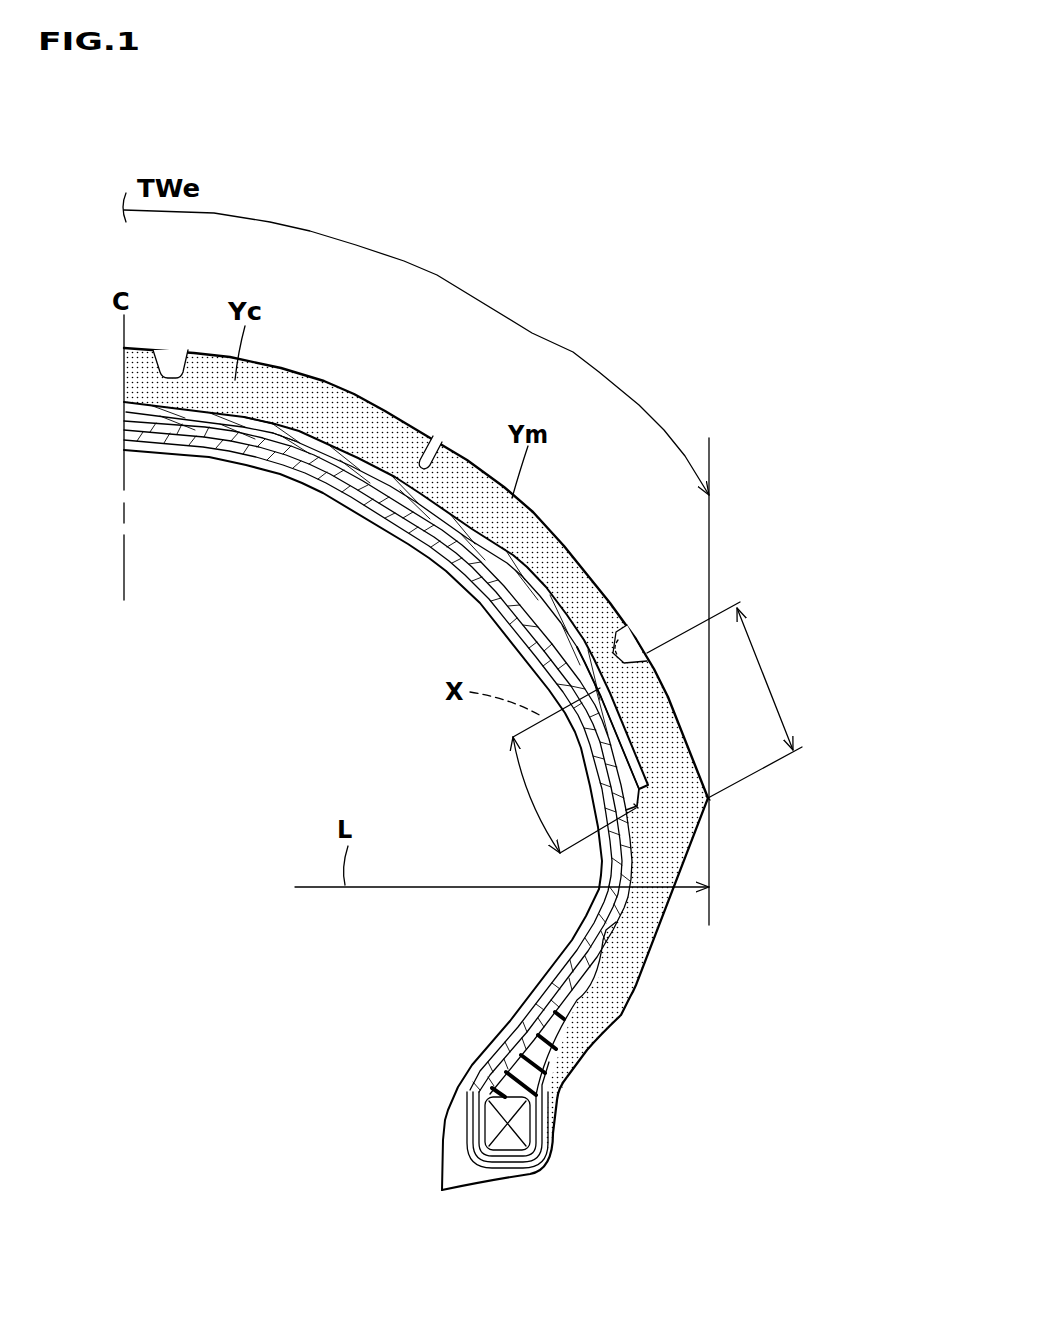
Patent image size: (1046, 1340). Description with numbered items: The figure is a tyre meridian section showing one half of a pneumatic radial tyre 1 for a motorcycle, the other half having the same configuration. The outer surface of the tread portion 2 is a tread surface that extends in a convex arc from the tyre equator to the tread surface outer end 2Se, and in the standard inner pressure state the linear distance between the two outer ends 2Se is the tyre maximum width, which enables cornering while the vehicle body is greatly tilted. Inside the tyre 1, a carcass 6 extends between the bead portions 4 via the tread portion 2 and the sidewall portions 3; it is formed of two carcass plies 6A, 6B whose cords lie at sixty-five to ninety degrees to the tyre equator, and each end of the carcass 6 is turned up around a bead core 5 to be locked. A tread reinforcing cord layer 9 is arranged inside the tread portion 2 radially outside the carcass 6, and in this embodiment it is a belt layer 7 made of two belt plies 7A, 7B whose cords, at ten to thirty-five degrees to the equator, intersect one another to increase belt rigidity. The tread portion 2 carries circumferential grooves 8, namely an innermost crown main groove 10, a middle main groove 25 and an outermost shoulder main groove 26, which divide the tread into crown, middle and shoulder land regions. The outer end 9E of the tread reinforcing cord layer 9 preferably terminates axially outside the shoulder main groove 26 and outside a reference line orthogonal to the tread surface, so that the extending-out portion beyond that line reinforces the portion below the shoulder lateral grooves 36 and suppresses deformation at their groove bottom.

The pneumatic radial tyre 1 is at (280, 358).
The tread portion 2 is at (348, 392).
The sidewall portion 3 is at (657, 975).
The bead portion 4 is at (539, 1056).
The bead core 5 is at (497, 1120).
The carcass 6 is at (378, 805).
The carcass ply 6A is at (563, 972).
The carcass ply 6B is at (542, 1018).
The belt layer 7 is at (386, 595).
The belt ply 7A is at (218, 425).
The belt ply 7B is at (288, 440).
The circumferential groove 8 is at (409, 451).
The crown main groove 10 is at (173, 360).
The middle main groove 25 is at (436, 440).
The shoulder main groove 26 is at (633, 630).
The tread reinforcing cord layer 9 is at (617, 789).
The outer end of tread reinforcing cord layer 9E is at (639, 810).
The shoulder lateral groove 36 is at (653, 710).
The tread surface outer end 2Se is at (710, 800).